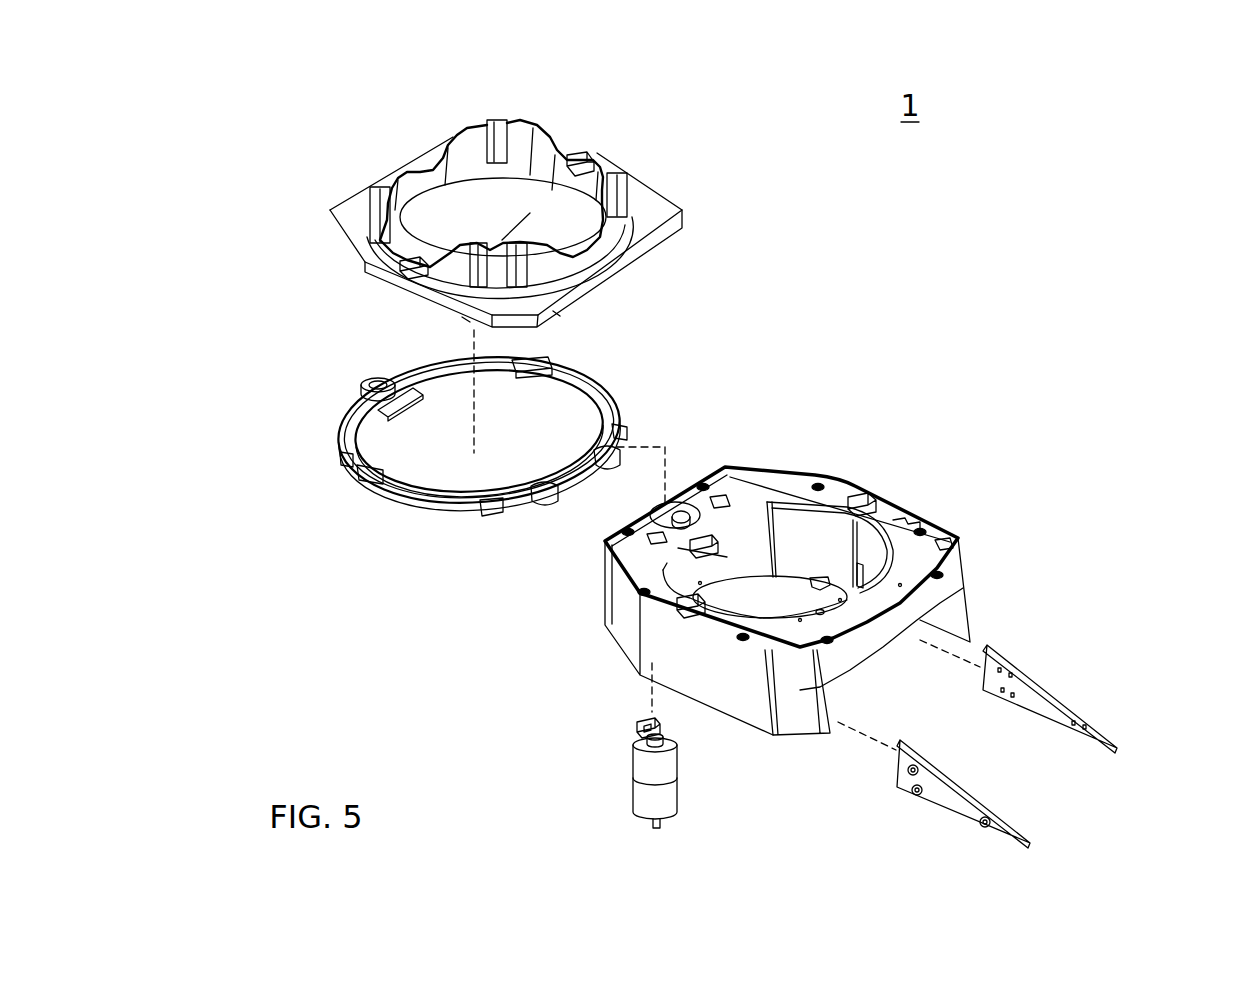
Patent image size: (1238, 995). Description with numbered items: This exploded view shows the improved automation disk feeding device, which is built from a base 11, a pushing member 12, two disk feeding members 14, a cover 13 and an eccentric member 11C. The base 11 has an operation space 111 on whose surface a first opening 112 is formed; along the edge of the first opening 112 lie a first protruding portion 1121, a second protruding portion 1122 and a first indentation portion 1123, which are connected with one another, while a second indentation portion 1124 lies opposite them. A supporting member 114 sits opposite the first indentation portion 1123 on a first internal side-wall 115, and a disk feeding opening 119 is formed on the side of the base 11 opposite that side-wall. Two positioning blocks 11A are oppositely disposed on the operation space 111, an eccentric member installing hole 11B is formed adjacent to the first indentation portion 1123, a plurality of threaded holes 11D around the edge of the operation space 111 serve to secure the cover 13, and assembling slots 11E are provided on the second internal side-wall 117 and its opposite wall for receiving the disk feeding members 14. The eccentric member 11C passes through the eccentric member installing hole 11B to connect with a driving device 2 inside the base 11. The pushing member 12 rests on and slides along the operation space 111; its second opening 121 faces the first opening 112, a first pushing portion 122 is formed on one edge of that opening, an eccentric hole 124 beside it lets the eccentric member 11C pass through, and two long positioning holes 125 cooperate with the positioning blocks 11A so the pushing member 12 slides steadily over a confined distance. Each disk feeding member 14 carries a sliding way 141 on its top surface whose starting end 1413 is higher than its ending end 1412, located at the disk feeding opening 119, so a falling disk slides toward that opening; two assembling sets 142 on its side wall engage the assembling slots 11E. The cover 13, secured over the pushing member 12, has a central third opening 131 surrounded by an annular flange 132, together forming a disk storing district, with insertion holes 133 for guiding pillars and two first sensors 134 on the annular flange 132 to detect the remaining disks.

The driving device 2 is at (630, 780).
The base 11 is at (604, 642).
The positioning blocks 11A is at (857, 495).
The eccentric member installing hole 11B is at (679, 497).
The eccentric member 11C is at (637, 725).
The threaded holes 11D is at (942, 575).
The assembling slots 11E is at (853, 577).
The operation space 111 is at (927, 558).
The first opening 112 is at (770, 600).
The supporting member 114 is at (707, 556).
The first internal side-wall 115 is at (728, 558).
The second internal side-wall 117 is at (860, 543).
The disk feeding opening 119 is at (870, 672).
The first protruding portion 1121 is at (655, 552).
The second protruding portion 1122 is at (733, 508).
The first indentation portion 1123 is at (683, 517).
The second indentation portion 1124 is at (927, 555).
The pushing member 12 is at (328, 439).
The second opening 121 is at (560, 427).
The first pushing portion 122 is at (402, 407).
The eccentric hole 124 is at (357, 367).
The long positioning holes 125 is at (567, 380).
The cover 13 is at (680, 253).
The third opening 131 is at (447, 217).
The annular flange 132 is at (533, 160).
The insertion holes 133 is at (490, 120).
The first sensors 134 is at (583, 150).
The disk feeding members 14 is at (1077, 696).
The sliding way 141 is at (1058, 697).
The ending end 1412 is at (1117, 748).
The starting end 1413 is at (990, 648).
The assembling sets 142 is at (985, 823).